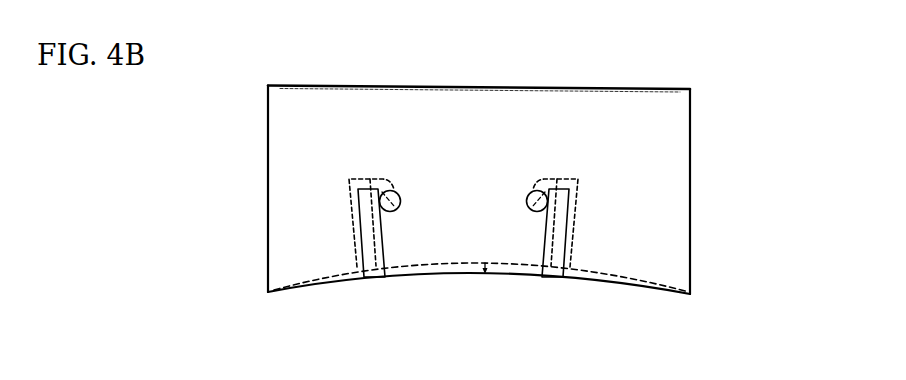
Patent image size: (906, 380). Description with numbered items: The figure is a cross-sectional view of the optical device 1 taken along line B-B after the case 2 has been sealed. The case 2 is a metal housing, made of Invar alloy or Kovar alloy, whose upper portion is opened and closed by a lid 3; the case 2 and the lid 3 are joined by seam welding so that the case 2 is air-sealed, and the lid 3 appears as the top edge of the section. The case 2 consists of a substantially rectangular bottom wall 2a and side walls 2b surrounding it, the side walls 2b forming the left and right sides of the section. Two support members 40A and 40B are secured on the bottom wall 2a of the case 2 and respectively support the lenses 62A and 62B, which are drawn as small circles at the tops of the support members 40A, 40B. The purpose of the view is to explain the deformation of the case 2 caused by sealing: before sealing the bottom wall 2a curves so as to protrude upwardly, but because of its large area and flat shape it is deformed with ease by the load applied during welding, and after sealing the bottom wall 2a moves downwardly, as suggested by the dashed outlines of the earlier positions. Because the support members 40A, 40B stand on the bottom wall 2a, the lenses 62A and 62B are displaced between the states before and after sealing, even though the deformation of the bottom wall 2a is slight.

The optical device 1 is at (721, 124).
The case 2 is at (691, 105).
The lid 3 is at (631, 88).
The bottom wall 2a is at (631, 288).
The side walls 2b is at (266, 233).
The support member 40A is at (380, 243).
The support member 40B is at (542, 240).
The lens 62A is at (402, 196).
The lens 62B is at (525, 196).